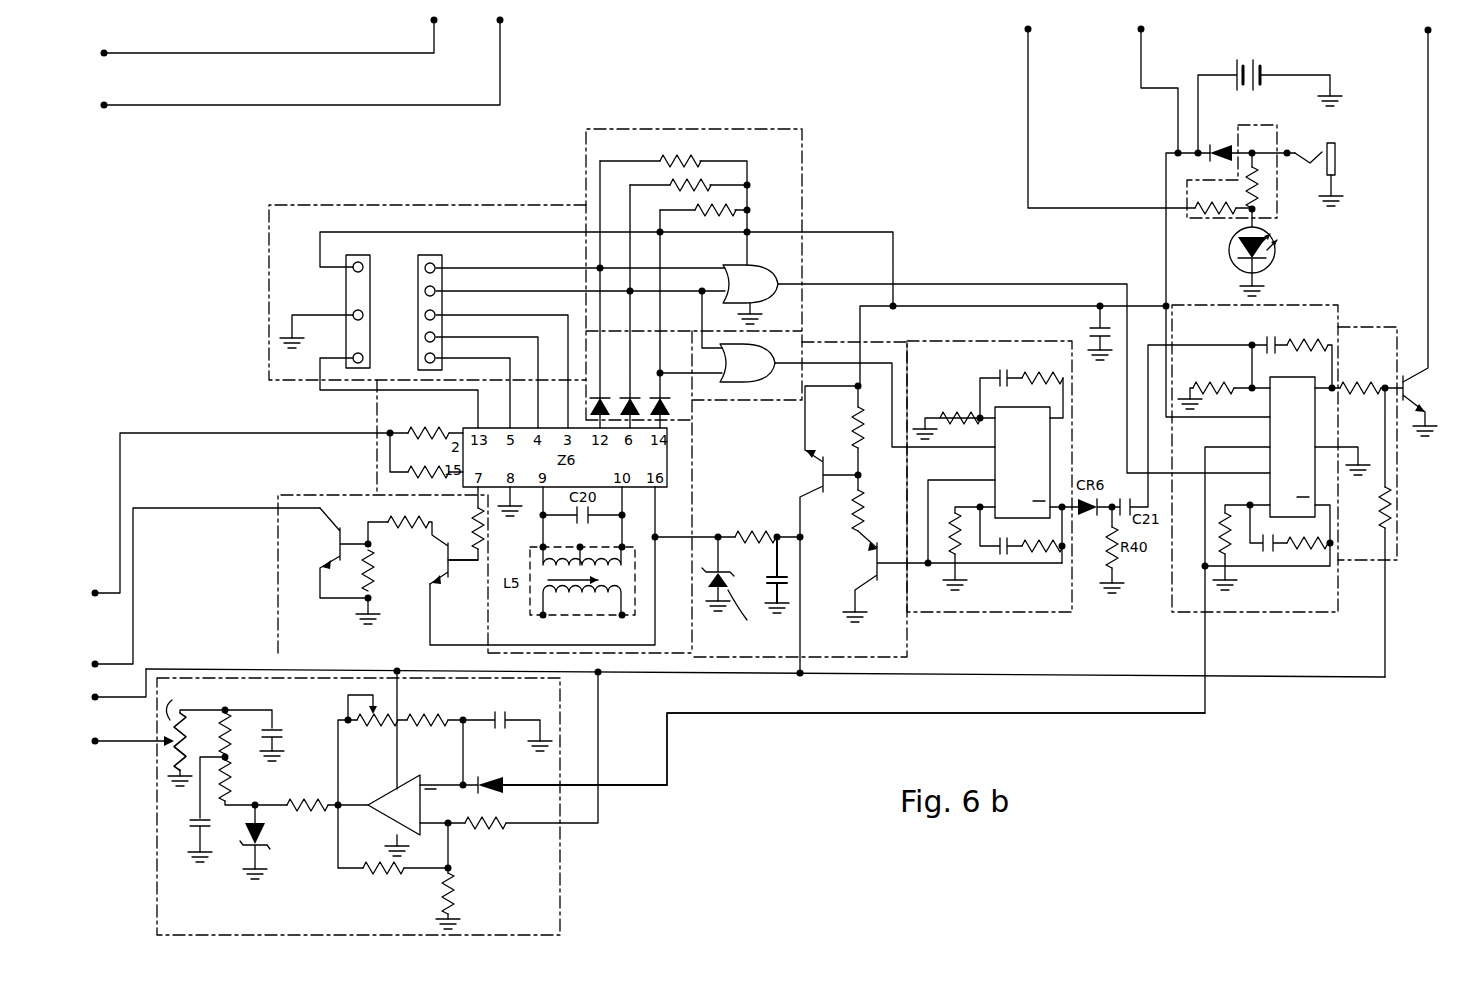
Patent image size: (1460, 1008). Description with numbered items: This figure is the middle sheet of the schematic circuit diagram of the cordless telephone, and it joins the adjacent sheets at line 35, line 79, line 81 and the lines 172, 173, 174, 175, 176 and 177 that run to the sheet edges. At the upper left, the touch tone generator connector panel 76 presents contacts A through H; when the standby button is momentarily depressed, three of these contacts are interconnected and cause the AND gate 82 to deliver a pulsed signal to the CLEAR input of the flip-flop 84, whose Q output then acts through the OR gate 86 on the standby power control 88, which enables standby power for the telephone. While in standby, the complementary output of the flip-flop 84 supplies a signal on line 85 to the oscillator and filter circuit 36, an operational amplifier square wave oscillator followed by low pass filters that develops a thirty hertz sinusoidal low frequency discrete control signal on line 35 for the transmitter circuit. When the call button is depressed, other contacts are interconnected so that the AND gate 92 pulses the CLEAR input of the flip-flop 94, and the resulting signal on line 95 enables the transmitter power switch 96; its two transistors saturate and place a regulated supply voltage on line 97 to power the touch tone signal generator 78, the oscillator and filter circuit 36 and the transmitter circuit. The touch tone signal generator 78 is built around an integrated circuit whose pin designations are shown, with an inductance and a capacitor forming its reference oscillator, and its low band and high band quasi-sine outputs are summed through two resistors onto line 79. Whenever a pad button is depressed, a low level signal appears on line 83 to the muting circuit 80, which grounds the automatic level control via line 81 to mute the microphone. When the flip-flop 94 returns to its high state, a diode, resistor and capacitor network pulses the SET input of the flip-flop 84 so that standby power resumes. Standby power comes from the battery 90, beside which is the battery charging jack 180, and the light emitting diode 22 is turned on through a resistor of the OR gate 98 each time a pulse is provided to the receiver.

The line 172 is at (258, 53).
The line 173 is at (270, 105).
The touch tone generator connector panel 76 is at (432, 205).
The touch tone signal generator 78 is at (372, 397).
The AND gate 82 is at (803, 175).
The AND gate 92 is at (767, 400).
The line 79 is at (120, 528).
The line 81 is at (125, 660).
The line 83 is at (473, 492).
The muting circuit 80 is at (280, 561).
The transmitter power switch 96 is at (910, 623).
The flip-flop 94 is at (1005, 612).
The line 95 is at (985, 565).
The line 97 is at (853, 676).
The line 174 is at (106, 700).
The line 85 is at (986, 713).
The flip-flop 84 is at (1272, 614).
The OR gate 86 is at (1372, 326).
The standby power control 88 is at (1410, 387).
The terminal lead 177 is at (1426, 47).
The line 175 is at (1027, 46).
The line 176 is at (1140, 48).
The battery 90 is at (1262, 63).
The battery charging jack 180 is at (1340, 153).
The OR gate 98 is at (1280, 211).
The light emitting diode 22 is at (1275, 258).
The oscillator and filter circuit 36 is at (562, 890).
The line 35 is at (130, 746).